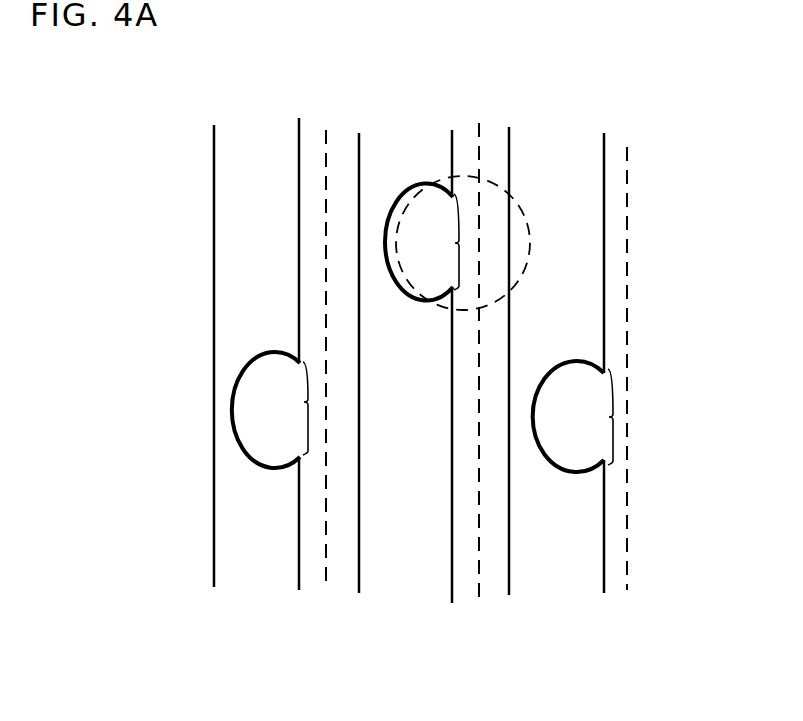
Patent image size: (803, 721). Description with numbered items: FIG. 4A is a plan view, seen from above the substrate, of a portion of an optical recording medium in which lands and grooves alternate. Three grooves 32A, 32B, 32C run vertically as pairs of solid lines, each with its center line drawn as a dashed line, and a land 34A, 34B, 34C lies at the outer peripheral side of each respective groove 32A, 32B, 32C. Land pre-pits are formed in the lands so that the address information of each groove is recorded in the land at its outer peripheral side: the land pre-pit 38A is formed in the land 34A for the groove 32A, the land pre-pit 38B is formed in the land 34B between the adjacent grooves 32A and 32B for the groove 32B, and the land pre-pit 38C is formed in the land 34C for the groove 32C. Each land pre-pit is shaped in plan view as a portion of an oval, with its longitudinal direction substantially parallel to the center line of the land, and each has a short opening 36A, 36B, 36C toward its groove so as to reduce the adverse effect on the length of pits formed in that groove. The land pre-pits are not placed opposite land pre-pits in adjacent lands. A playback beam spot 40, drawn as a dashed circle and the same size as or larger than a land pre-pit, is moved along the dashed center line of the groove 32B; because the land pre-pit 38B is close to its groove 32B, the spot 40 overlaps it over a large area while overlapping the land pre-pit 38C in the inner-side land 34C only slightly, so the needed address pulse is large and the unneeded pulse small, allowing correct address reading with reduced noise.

The groove 32A is at (328, 142).
The groove 32B is at (480, 148).
The groove 32C is at (630, 148).
The land 34A is at (260, 538).
The land 34B is at (405, 538).
The land 34C is at (562, 540).
The opening of land pre-pit 36A is at (308, 402).
The opening of land pre-pit 36B is at (459, 243).
The opening of land pre-pit 36C is at (677, 410).
The land pre-pit 38A is at (243, 448).
The land pre-pit 38B is at (393, 182).
The land pre-pit 38C is at (567, 473).
The playback beam spot 40 is at (522, 212).